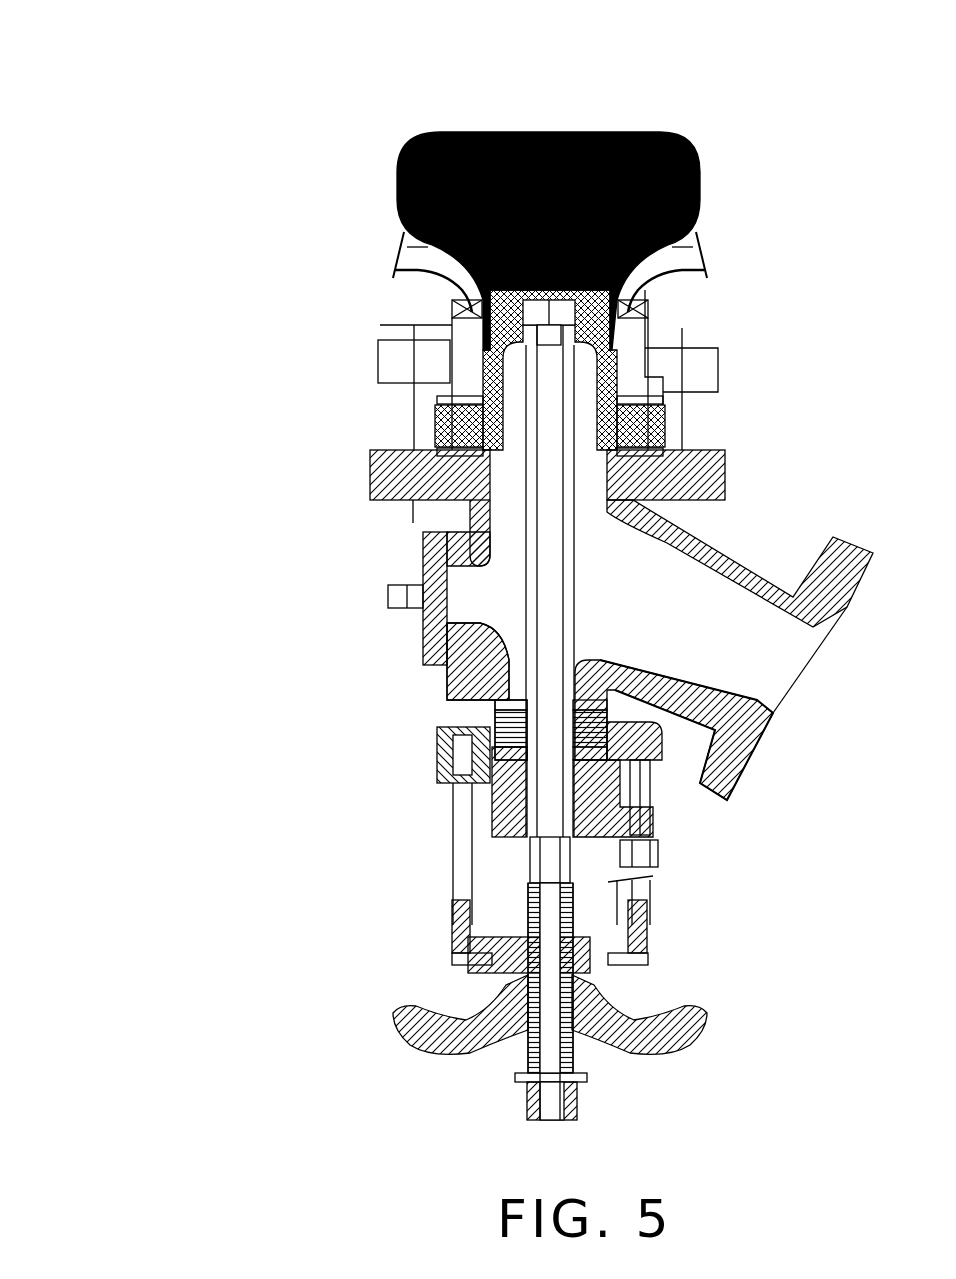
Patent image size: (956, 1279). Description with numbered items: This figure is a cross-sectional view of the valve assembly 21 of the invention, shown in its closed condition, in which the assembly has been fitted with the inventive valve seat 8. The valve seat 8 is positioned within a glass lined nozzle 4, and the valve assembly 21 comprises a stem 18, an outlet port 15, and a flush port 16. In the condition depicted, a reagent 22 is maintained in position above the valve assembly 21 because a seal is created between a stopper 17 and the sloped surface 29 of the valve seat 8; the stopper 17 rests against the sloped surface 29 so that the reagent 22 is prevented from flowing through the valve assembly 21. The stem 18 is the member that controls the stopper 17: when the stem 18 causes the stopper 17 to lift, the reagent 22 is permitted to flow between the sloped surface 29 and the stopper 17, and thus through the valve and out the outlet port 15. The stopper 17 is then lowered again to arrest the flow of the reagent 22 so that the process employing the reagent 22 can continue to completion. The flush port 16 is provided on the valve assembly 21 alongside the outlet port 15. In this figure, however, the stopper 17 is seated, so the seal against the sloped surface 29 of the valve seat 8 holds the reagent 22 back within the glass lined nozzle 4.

The reagent 22 is at (548, 187).
The glass lined nozzle 4 is at (604, 341).
The stopper 17 is at (378, 370).
The sloped surface 29 is at (305, 417).
The valve seat 8 is at (745, 426).
The outlet port 15 is at (748, 637).
The stem 18 is at (348, 722).
The flush port 16 is at (336, 635).
The valve assembly 21 is at (421, 785).